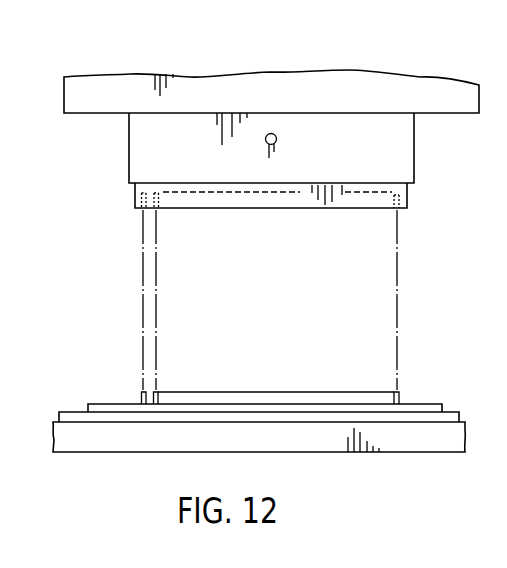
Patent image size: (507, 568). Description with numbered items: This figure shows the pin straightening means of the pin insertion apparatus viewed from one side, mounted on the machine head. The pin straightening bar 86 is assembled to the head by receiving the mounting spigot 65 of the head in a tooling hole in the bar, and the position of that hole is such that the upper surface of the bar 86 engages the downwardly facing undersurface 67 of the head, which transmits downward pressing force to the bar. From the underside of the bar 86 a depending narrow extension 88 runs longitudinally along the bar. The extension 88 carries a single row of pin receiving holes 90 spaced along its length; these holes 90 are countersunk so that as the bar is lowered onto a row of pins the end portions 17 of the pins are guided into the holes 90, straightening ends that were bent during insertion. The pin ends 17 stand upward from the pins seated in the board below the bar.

The downwardly facing surface of the head 67 is at (88, 112).
The pin straightening bar 86 is at (129, 150).
The mounting spigot 65 is at (277, 136).
The depending narrow extension 88 is at (135, 207).
The pin receiving holes 90 is at (146, 211).
The end portions of the pins 17 is at (155, 392).